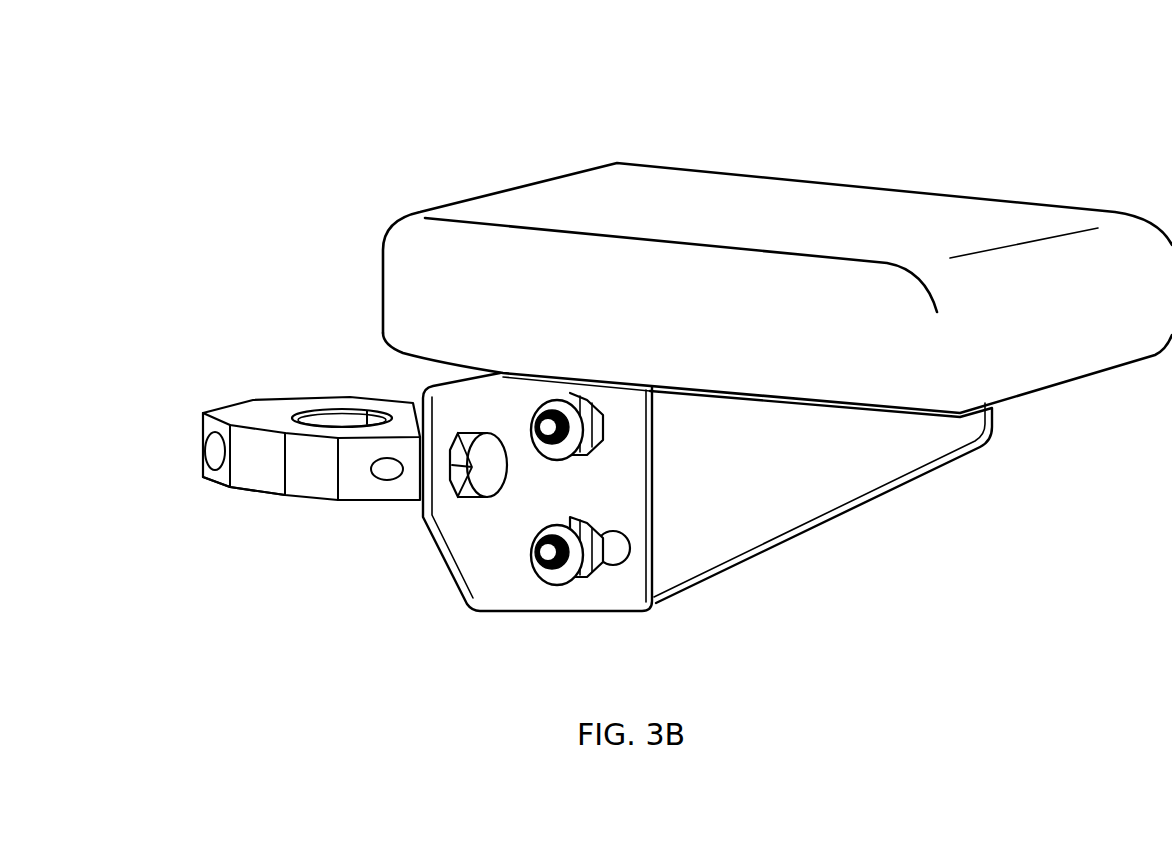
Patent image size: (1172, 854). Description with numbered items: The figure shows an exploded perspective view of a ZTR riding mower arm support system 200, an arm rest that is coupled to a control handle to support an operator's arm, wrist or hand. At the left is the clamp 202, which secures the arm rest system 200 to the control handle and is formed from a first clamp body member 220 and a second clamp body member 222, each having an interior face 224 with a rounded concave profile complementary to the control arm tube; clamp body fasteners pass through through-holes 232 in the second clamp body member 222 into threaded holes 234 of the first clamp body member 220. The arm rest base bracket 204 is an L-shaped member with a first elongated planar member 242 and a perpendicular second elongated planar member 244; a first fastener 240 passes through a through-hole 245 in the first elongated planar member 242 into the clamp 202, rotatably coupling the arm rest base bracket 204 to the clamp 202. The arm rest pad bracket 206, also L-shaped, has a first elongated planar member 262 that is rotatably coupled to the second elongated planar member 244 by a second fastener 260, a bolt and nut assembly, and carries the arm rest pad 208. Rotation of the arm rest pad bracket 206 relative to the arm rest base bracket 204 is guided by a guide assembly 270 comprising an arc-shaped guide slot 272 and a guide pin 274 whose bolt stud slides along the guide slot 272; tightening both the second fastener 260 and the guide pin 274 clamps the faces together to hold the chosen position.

The ZTR riding mower arm support system 200 is at (1081, 78).
The ZTR arm rest clamp 202 is at (272, 446).
The arm rest base bracket 204 is at (446, 581).
The arm rest pad bracket 206 is at (856, 505).
The arm rest pad 208 is at (886, 166).
The first clamp body member 220 is at (296, 498).
The second clamp body member 222 is at (245, 493).
The interior face 224 is at (309, 410).
The through-hole 232 is at (199, 459).
The threaded hole 234 is at (383, 484).
The first fastener 240 is at (433, 509).
The first elongated planar member 242 is at (467, 594).
The second elongated planar member 244 is at (615, 595).
The through-hole 245 is at (453, 497).
The second fastener 260 is at (608, 437).
The first elongated planar member 262 is at (751, 519).
The guide assembly 270 is at (553, 592).
The guide slot 272 is at (628, 569).
The guide pin 274 is at (553, 592).